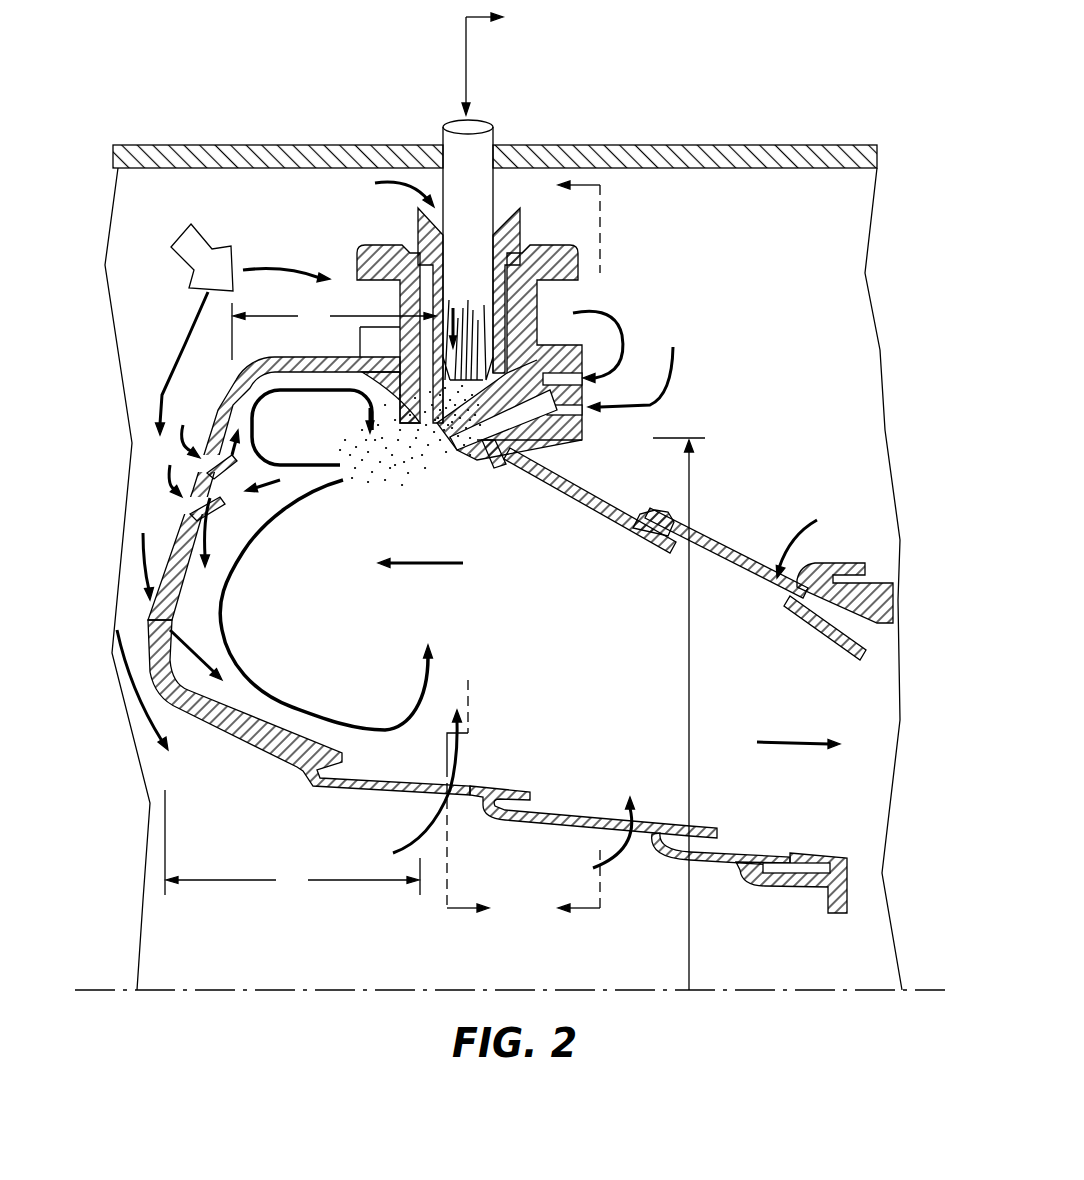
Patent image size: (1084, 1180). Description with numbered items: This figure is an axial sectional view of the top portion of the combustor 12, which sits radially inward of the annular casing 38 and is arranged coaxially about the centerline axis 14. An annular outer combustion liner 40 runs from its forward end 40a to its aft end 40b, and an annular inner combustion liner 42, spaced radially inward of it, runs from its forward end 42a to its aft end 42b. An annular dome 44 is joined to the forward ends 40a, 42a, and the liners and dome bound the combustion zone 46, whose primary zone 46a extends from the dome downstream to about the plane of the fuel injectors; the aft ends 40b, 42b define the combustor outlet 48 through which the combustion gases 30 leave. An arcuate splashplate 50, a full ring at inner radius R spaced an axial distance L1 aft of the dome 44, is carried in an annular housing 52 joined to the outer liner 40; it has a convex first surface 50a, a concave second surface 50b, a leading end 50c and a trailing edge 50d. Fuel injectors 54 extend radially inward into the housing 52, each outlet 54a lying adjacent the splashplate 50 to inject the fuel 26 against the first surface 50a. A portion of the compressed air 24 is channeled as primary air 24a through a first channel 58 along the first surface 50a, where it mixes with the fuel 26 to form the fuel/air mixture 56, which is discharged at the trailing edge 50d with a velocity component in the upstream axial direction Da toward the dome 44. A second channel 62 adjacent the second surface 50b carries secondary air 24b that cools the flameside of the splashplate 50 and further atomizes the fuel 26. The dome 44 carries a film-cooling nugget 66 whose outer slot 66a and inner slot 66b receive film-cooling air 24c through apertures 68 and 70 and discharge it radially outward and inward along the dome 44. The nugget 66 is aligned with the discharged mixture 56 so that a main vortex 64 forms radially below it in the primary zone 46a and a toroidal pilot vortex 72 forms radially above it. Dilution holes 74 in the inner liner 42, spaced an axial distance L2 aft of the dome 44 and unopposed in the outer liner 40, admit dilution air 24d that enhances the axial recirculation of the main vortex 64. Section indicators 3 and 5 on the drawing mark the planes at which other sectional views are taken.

The section line 3- 3 is at (486, 464).
The section line 5- 5 is at (570, 549).
The combustor 12 is at (750, 552).
The centerline axis 14 is at (867, 990).
The compressed air 24 is at (203, 252).
The primary air 24a is at (602, 322).
The secondary air 24b is at (675, 360).
The film-cooling air 24c is at (160, 490).
The dilution air 24d is at (460, 748).
The fuel 26 is at (457, 118).
The combustion gases 30 is at (793, 745).
The annular casing 38 is at (743, 145).
The outer combustion liner 40 is at (605, 496).
The outer liner forward end 40a is at (250, 362).
The outer liner aft end 40b is at (877, 570).
The inner combustion liner 42 is at (580, 810).
The inner liner forward end 42a is at (188, 710).
The inner liner aft end 42b is at (847, 863).
The dome 44 is at (168, 567).
The combustion zone 46 is at (557, 645).
The primary zone 46a is at (330, 597).
The combustor outlet 48 is at (870, 792).
The splashplate 50 is at (452, 438).
The splashplate first surface 50a is at (537, 353).
The splashplate second surface 50b is at (487, 460).
The splashplate leading end 50c is at (528, 443).
The splashplate trailing edge 50d is at (433, 428).
The housing 52 is at (547, 335).
The fuel injectors 54 is at (497, 196).
The fuel injector outlet 54a is at (349, 417).
The fuel/air mixture 56 is at (410, 435).
The first channel 58 is at (582, 379).
The second channel 62 is at (582, 410).
The main vortex 64 is at (280, 690).
The film-cooling nugget 66 is at (308, 441).
The outer slot 66a is at (265, 428).
The inner slot 66b is at (236, 515).
The apertures 68 is at (220, 435).
The apertures 70 is at (187, 513).
The pilot recirculation vortex 72 is at (273, 462).
The dilution holes 74 is at (460, 783).
The axial distance L1 is at (334, 331).
The axial distance L2 is at (292, 843).
The inner radius R is at (692, 472).
The upstream axial direction Da is at (413, 567).